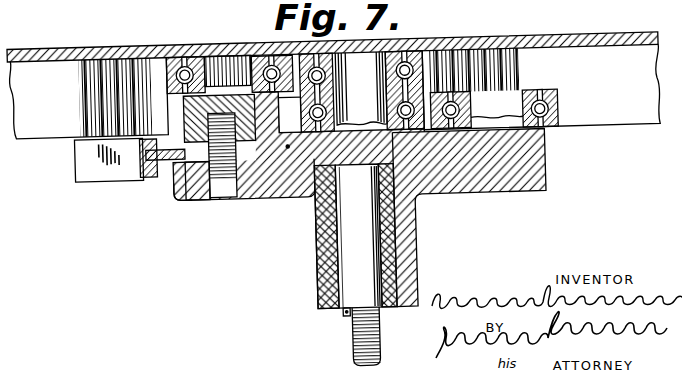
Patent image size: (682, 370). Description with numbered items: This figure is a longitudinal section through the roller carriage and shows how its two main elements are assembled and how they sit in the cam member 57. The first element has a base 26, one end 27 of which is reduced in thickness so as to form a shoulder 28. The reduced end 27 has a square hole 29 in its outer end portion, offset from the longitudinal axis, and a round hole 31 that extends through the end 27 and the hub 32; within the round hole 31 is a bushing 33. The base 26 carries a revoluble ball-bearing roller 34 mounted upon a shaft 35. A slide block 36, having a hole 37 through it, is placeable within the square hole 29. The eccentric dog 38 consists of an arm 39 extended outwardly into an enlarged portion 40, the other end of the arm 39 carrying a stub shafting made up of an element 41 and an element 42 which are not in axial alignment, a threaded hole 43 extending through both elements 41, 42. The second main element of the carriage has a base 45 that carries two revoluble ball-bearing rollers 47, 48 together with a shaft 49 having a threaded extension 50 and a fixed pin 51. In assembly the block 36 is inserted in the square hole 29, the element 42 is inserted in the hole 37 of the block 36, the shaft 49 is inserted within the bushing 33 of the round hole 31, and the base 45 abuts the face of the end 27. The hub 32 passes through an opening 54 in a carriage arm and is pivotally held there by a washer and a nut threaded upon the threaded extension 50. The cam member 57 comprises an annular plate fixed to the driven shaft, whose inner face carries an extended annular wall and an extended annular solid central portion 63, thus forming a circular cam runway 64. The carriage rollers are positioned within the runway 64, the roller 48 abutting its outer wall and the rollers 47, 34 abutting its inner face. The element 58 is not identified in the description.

The base 26 is at (535, 158).
The reduced end 27 is at (305, 178).
The shoulder 28 is at (410, 140).
The square hole 29 is at (180, 200).
The round hole 31 is at (397, 228).
The hub 32 is at (323, 285).
The bushing 33 is at (397, 250).
The ball-bearing roller 34 is at (558, 98).
The shaft 35 is at (490, 107).
The slide block 36 is at (272, 183).
The hole 37 is at (203, 197).
The eccentric dog 38 is at (147, 190).
The arm 39 is at (165, 185).
The enlarged portion 40 is at (103, 183).
The stub shafting element 41 is at (252, 96).
The stub shafting element 42 is at (238, 196).
The threaded hole 43 is at (232, 83).
The base 45 is at (287, 148).
The ball-bearing roller 47 is at (158, 74).
The ball-bearing roller 48 is at (423, 63).
The shaft 49 is at (290, 265).
The threaded extension 50 is at (380, 337).
The fixed pin 51 is at (343, 314).
The opening 54 is at (213, 195).
The cam member 57 is at (108, 37).
The member 58 is at (20, 8).
The annular solid central portion 63 is at (103, 108).
The cam runway 64 is at (60, 75).